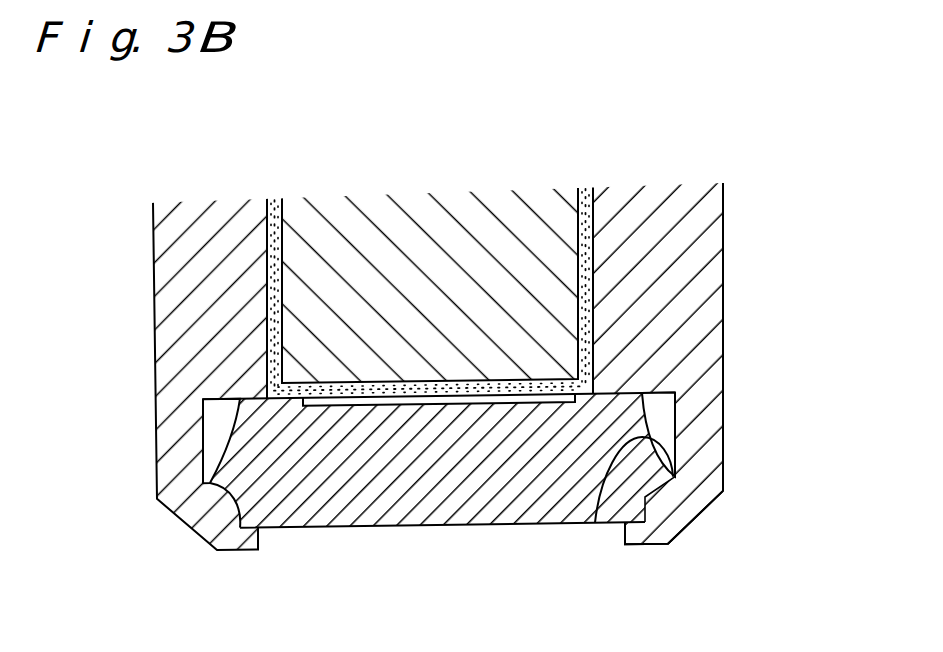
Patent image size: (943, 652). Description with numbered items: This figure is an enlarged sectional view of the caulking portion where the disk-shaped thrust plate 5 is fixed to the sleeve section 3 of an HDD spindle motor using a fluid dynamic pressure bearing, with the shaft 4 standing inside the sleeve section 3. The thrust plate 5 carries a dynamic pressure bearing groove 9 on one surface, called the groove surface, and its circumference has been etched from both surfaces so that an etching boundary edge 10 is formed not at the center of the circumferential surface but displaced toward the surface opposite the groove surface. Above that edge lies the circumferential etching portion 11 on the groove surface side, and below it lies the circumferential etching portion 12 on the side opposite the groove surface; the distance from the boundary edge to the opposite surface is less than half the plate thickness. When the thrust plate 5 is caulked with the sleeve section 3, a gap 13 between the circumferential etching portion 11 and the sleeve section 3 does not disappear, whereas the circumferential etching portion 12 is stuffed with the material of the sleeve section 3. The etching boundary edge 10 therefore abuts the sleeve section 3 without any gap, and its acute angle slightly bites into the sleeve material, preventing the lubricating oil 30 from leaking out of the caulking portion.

The sleeve section 3 is at (685, 228).
The shaft 4 is at (488, 232).
The thrust plate 5 is at (415, 500).
The dynamic pressure bearing groove 9 is at (365, 405).
The etching boundary edge 10 is at (677, 477).
The circumferential etching portion on the groove surface side 11 is at (604, 472).
The circumferential etching portion opposite from the groove surface 12 is at (645, 485).
The gap 13 is at (658, 417).
The lubricating oil 30 is at (595, 313).